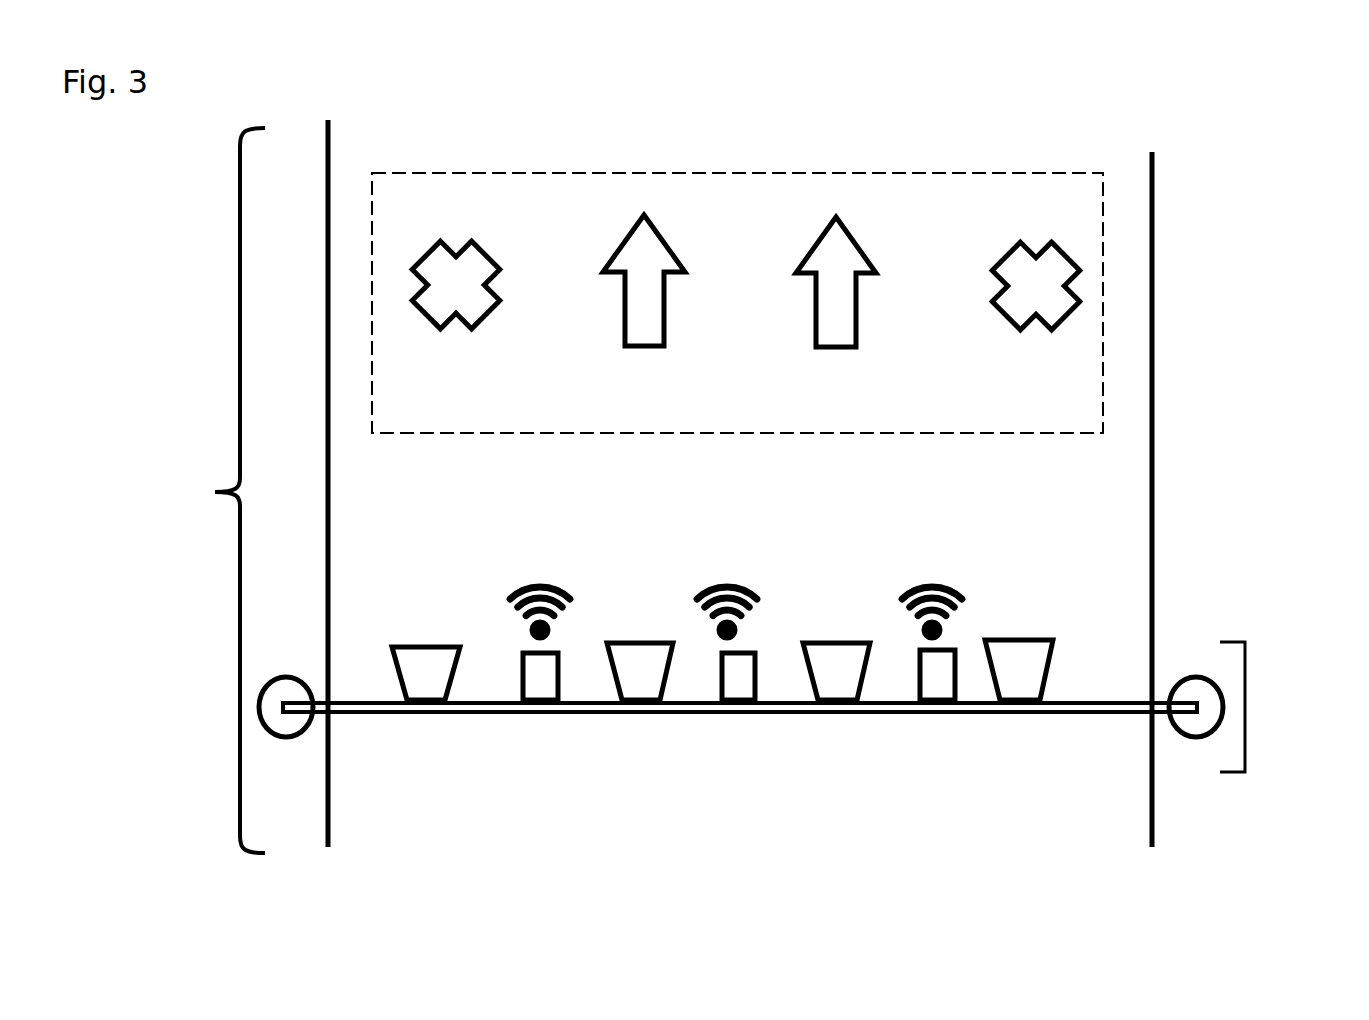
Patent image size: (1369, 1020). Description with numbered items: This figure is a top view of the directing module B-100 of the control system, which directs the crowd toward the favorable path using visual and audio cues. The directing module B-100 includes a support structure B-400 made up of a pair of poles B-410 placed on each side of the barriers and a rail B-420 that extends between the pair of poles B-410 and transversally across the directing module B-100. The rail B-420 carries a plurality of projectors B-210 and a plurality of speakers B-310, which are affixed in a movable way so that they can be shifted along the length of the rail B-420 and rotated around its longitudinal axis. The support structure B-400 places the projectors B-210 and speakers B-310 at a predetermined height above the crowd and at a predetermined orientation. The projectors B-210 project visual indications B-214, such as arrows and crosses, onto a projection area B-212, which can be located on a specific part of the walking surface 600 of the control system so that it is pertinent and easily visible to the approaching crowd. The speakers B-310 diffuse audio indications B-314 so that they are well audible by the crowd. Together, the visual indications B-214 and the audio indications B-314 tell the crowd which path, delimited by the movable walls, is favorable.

The directing module B-100 is at (642, 486).
The projection area B-212 is at (1093, 434).
The visual indications B-214 is at (875, 272).
The audio indications B-314 is at (757, 597).
The speakers B-310 is at (702, 703).
The projectors B-210 is at (990, 678).
The poles B-410 is at (280, 737).
The rail B-420 is at (980, 715).
The support structure B-400 is at (1245, 707).
The walking surface 600 is at (748, 806).